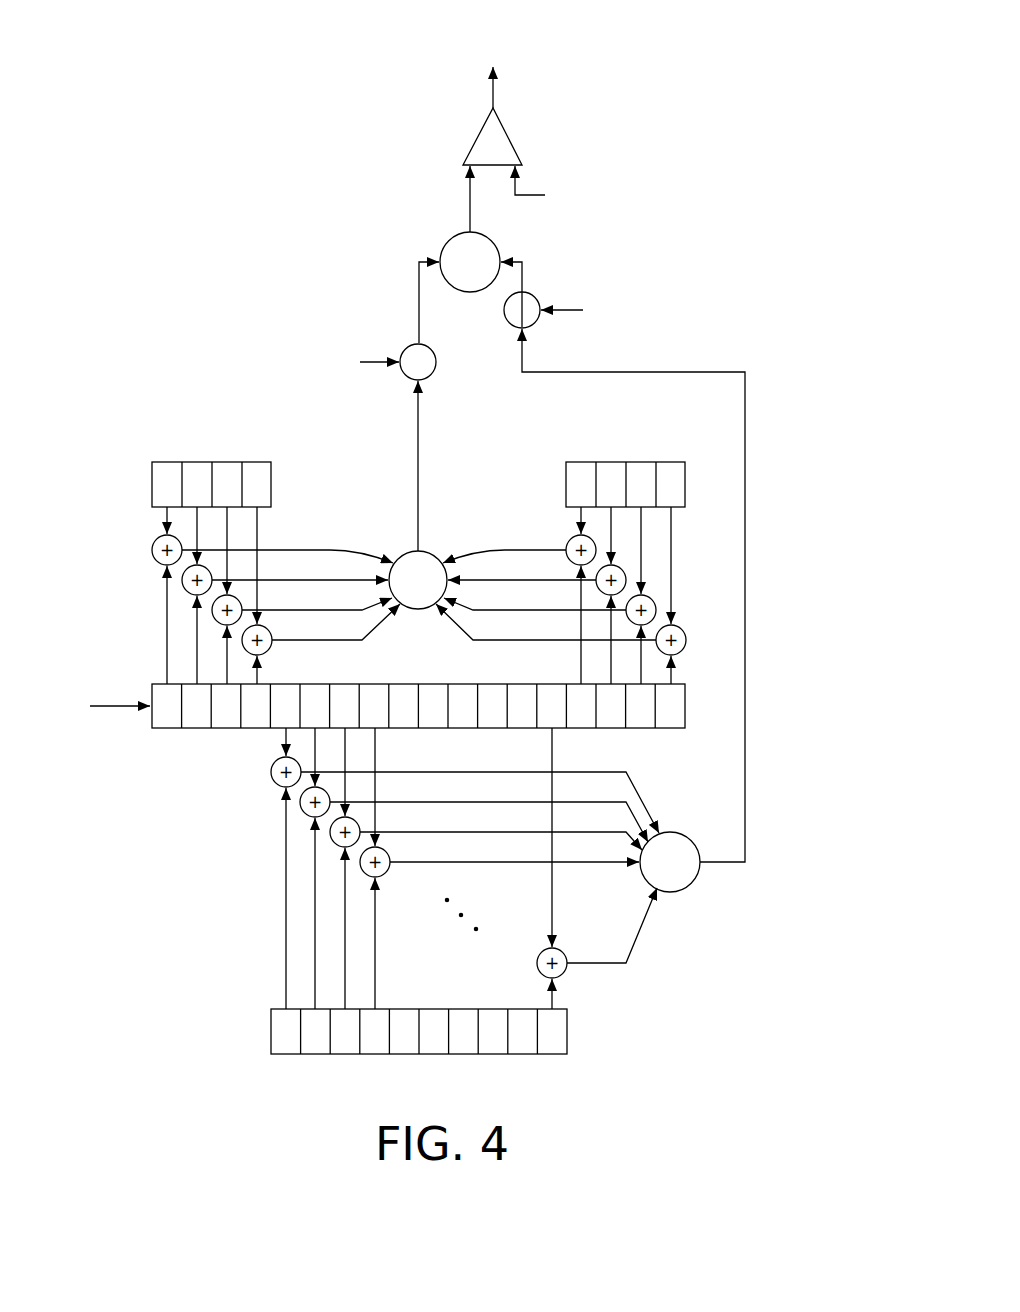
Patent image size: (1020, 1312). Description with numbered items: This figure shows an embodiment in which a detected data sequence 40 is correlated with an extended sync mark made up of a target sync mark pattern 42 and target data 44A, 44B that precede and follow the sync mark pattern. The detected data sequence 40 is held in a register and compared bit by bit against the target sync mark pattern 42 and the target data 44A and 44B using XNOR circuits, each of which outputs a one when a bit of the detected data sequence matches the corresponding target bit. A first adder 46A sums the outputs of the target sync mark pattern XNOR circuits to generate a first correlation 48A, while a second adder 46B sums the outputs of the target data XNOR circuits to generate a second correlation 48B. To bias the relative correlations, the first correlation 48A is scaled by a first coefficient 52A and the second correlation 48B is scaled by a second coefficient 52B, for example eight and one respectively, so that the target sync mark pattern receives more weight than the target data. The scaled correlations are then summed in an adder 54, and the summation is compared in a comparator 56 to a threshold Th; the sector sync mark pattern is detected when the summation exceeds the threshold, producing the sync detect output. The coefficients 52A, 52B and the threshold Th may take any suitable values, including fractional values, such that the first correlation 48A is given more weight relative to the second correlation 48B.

The detected data sequence 40 is at (108, 710).
The target sync mark pattern 42 is at (582, 1066).
The target data 44A is at (150, 416).
The target data 44B is at (551, 445).
The first adder 46A is at (693, 892).
The second adder 46B is at (411, 551).
The first correlation 48A is at (745, 785).
The second correlation 48B is at (418, 447).
The first coefficient 52A is at (658, 276).
The second coefficient 52B is at (284, 346).
The adder 54 is at (445, 240).
The comparator 56 is at (513, 137).